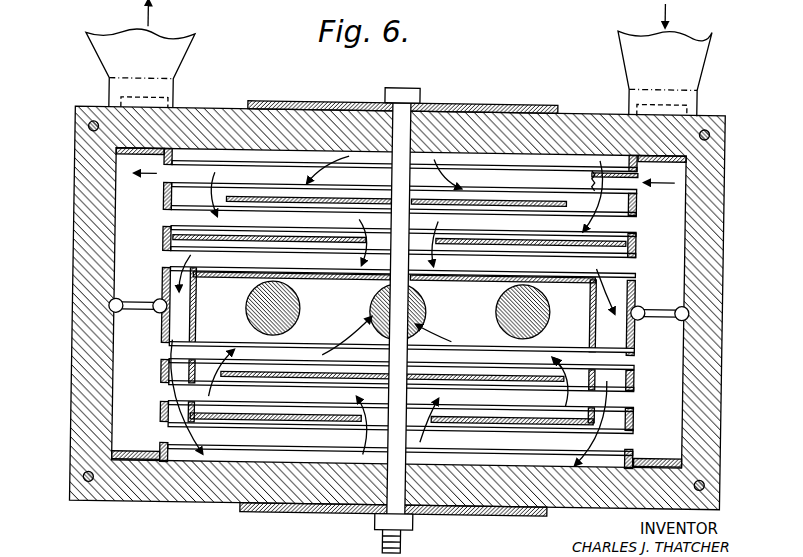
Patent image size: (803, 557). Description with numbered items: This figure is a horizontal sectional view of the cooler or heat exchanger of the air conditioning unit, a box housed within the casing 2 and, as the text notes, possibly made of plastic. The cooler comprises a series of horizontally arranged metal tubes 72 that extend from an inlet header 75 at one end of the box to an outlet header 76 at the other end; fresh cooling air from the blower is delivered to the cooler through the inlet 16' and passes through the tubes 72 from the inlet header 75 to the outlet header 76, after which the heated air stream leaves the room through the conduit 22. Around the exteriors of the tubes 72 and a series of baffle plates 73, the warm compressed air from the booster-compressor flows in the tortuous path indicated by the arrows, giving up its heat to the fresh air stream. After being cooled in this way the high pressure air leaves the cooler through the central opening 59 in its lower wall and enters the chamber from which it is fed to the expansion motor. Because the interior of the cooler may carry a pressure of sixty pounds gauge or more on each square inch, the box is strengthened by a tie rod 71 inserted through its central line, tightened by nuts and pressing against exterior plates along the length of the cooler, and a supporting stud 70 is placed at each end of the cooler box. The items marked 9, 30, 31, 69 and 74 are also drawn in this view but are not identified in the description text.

The casing 2 is at (78, 197).
The bolts 9 is at (87, 131).
The inlet 16' is at (682, 60).
The conduit 22 is at (159, 76).
The pipe 30 is at (250, 307).
The pipe 31 is at (508, 314).
The central opening 59 is at (415, 305).
The inner plate 69 is at (637, 288).
The supporting stud 70 is at (135, 319).
The tie rod 71 is at (396, 143).
The metal tubes 72 is at (545, 180).
The baffle plates 73 is at (496, 201).
The central chamber plate 74 is at (592, 319).
The inlet header 75 is at (671, 241).
The outlet header 76 is at (132, 247).